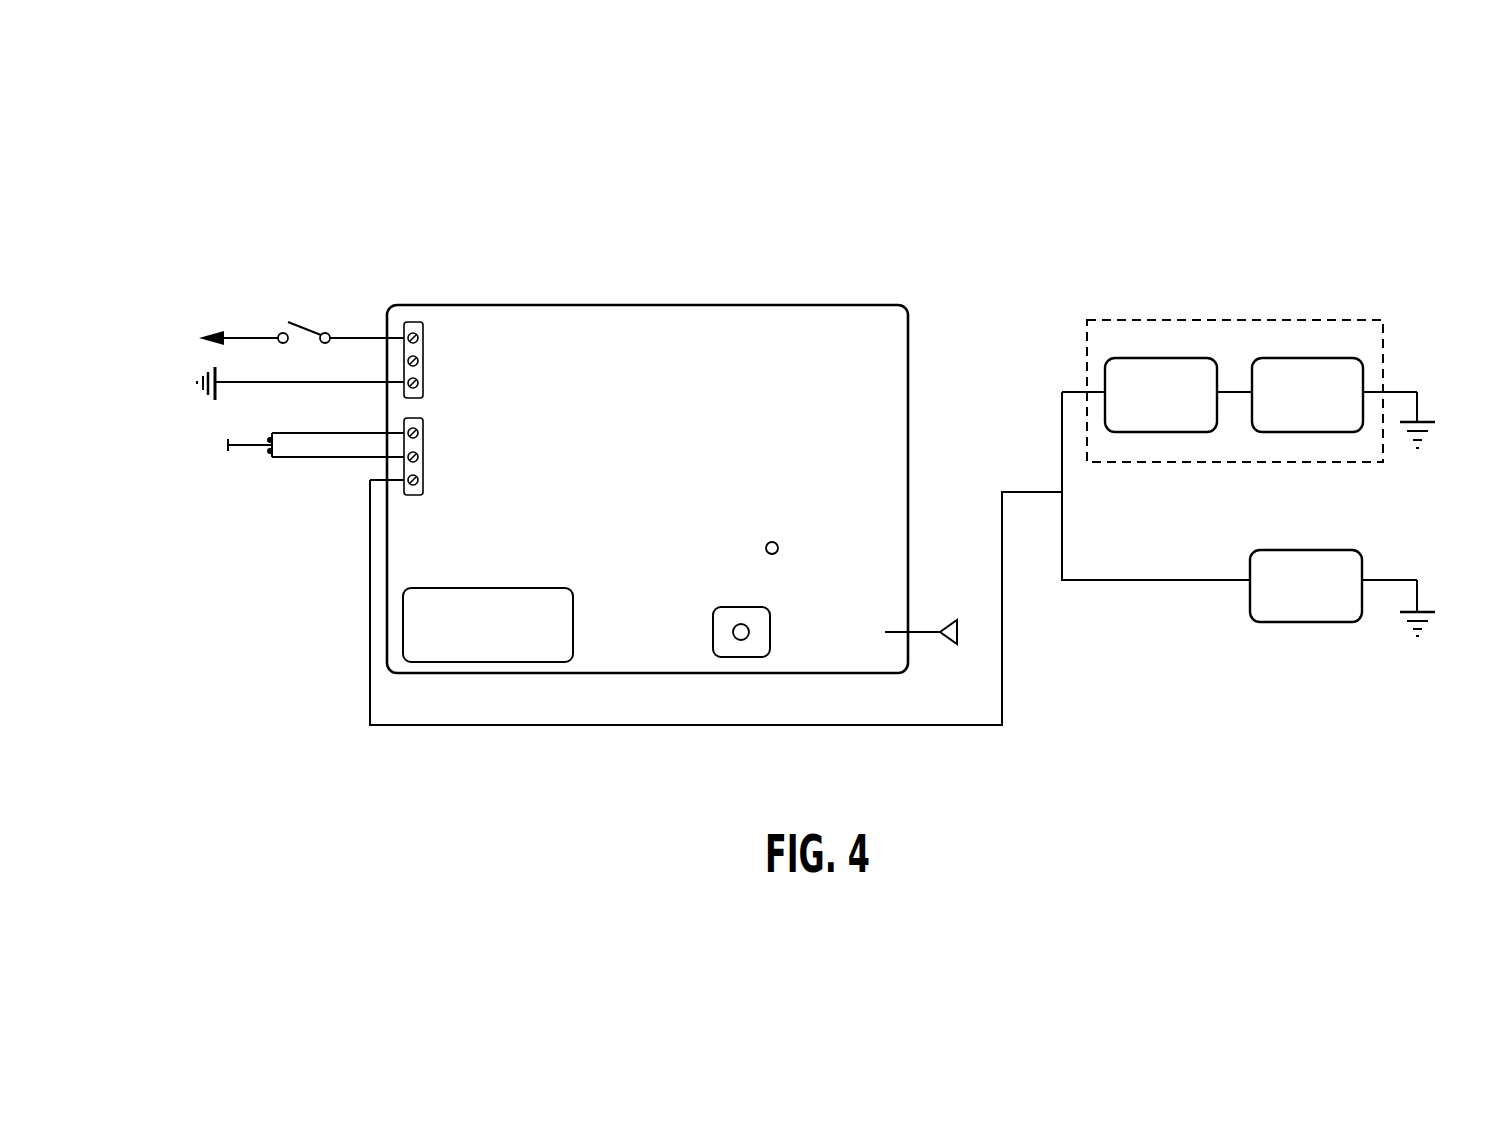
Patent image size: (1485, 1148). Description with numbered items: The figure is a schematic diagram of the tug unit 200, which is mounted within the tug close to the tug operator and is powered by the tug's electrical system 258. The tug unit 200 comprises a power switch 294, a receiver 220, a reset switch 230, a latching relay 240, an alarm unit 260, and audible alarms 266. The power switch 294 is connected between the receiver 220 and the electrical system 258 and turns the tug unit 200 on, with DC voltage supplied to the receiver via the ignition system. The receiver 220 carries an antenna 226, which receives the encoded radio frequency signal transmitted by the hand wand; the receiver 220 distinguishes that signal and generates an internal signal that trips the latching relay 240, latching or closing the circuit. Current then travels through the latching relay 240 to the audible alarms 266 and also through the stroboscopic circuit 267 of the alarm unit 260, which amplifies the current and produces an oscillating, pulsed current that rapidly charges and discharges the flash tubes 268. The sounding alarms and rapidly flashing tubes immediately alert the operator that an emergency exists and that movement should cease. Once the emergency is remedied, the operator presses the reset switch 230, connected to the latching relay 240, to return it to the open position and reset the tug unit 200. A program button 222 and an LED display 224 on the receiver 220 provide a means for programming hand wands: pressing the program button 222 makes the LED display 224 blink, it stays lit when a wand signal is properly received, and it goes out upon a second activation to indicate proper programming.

The tug unit 200 is at (940, 323).
The receiver 220 is at (689, 435).
The program button 222 is at (782, 620).
The LED display 224 is at (766, 546).
The antenna 226 is at (950, 622).
The reset switch 230 is at (264, 460).
The latching relay 240 is at (574, 625).
The electrical system 258 is at (246, 332).
The alarm unit 260 is at (1224, 314).
The audible alarms 266 is at (1325, 606).
The stroboscopic circuit 267 is at (1180, 409).
The flash tubes 268 is at (1325, 409).
The power switch 294 is at (318, 331).